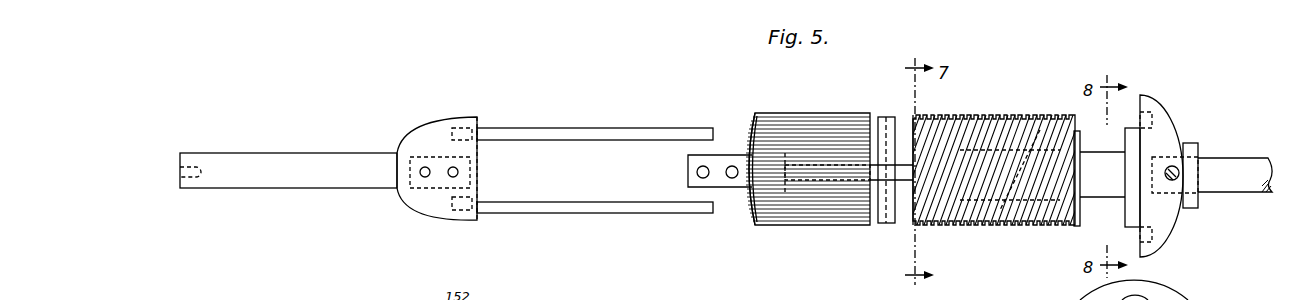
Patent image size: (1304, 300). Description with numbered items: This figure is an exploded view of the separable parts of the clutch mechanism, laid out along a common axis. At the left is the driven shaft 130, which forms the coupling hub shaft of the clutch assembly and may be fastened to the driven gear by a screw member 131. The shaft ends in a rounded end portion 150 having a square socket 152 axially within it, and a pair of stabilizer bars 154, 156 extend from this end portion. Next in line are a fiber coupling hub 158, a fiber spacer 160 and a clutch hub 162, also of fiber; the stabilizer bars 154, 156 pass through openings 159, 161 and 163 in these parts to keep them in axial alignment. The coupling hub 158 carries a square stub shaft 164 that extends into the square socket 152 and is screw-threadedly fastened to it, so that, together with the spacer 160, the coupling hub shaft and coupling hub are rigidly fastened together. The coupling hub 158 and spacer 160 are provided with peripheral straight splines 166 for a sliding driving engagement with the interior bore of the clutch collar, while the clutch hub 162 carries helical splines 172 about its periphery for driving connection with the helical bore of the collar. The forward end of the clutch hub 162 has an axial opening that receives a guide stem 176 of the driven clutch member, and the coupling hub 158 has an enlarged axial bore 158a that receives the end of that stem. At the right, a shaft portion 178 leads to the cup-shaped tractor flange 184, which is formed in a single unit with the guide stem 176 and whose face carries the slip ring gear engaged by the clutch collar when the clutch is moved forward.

The driven shaft 130 is at (286, 182).
The screw member 131 is at (196, 168).
The rounded end portion 150 is at (428, 208).
The square socket 152 is at (425, 150).
The stabilizer bar 154 is at (578, 128).
The stabilizer bar 156 is at (573, 214).
The fiber coupling hub 158 is at (808, 175).
The enlarged axial bore 158a is at (753, 208).
The opening 159 is at (843, 118).
The fiber spacer 160 is at (880, 222).
The opening 161 is at (881, 120).
The clutch hub 162 is at (985, 115).
The opening 163 is at (968, 116).
The square stub shaft 164 is at (688, 171).
The peripheral straight splines 166 is at (800, 105).
The helical splines 172 is at (948, 226).
The guide stem 176 is at (892, 206).
The shaft portion 178 is at (1098, 198).
The cup-shaped tractor flange 184 is at (1165, 232).